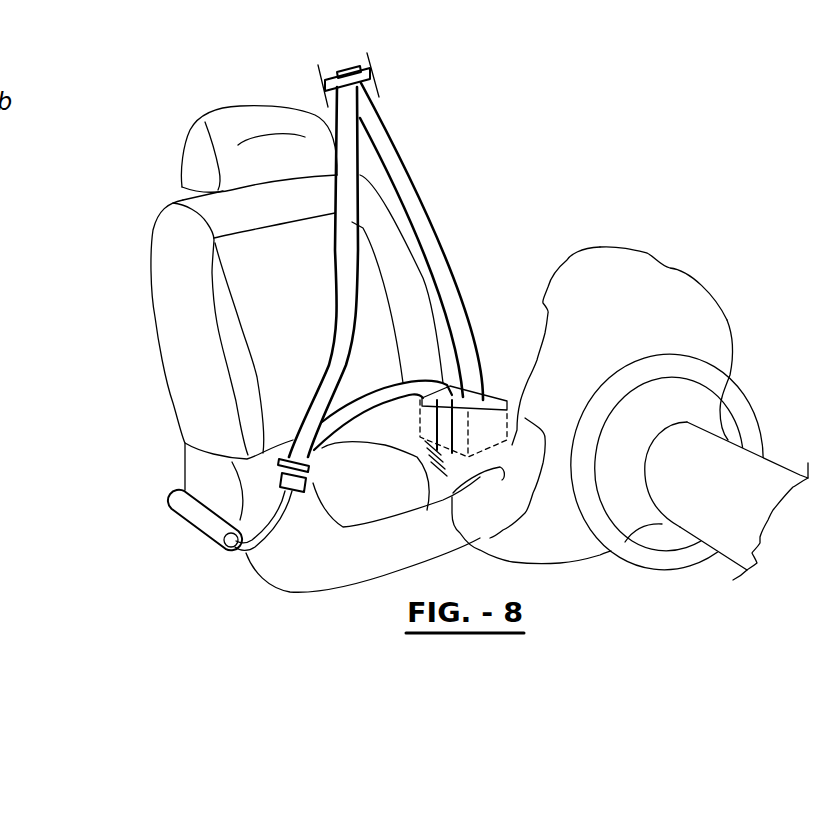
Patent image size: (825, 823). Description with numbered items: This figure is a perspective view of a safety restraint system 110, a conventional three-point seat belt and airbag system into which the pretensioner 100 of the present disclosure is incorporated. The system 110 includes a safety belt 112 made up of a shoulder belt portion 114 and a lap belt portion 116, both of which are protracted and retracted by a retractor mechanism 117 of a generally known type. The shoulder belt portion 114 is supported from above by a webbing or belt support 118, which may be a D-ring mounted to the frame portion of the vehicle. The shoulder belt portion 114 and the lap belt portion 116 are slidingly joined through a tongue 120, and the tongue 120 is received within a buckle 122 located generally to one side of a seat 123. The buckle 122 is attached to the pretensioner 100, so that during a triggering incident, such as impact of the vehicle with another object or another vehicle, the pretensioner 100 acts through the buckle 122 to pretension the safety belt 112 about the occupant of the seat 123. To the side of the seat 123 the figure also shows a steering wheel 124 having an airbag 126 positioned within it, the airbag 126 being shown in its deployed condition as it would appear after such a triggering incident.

The pretensioner 100 is at (192, 515).
The safety restraint system 110 is at (412, 159).
The safety belt 112 is at (343, 330).
The shoulder belt portion 114 is at (422, 223).
The lap belt portion 116 is at (313, 423).
The retractor mechanism 117 is at (497, 395).
The belt support 118 is at (327, 73).
The tongue 120 is at (305, 481).
The buckle 122 is at (293, 500).
The seat 123 is at (203, 337).
The steering wheel 124 is at (730, 387).
The airbag 126 is at (657, 263).